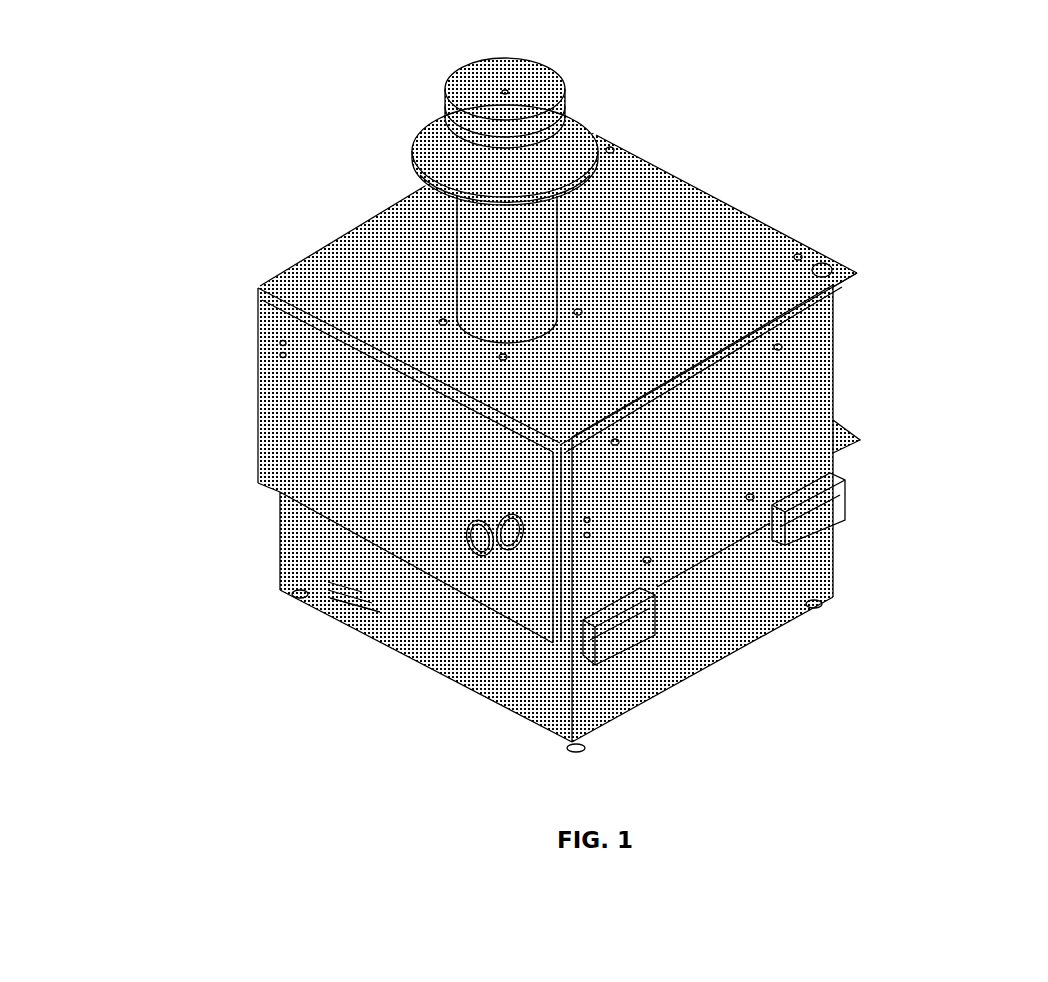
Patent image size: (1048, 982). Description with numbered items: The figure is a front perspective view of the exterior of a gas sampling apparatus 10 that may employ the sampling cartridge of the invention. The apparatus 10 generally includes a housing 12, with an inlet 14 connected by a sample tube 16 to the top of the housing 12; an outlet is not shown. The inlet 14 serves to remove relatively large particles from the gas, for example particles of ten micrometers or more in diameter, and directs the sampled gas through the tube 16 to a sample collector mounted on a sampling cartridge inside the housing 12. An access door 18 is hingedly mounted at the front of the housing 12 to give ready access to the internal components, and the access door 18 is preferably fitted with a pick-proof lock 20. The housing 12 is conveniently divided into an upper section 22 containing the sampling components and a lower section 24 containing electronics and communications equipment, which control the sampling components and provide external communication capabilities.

The gas sampling apparatus 10 is at (226, 158).
The housing 12 is at (711, 251).
The inlet 14 is at (586, 81).
The sample tube 16 is at (579, 221).
The access door 18 is at (258, 445).
The pick-proof lock 20 is at (500, 562).
The upper section 22 is at (835, 386).
The lower section 24 is at (827, 583).